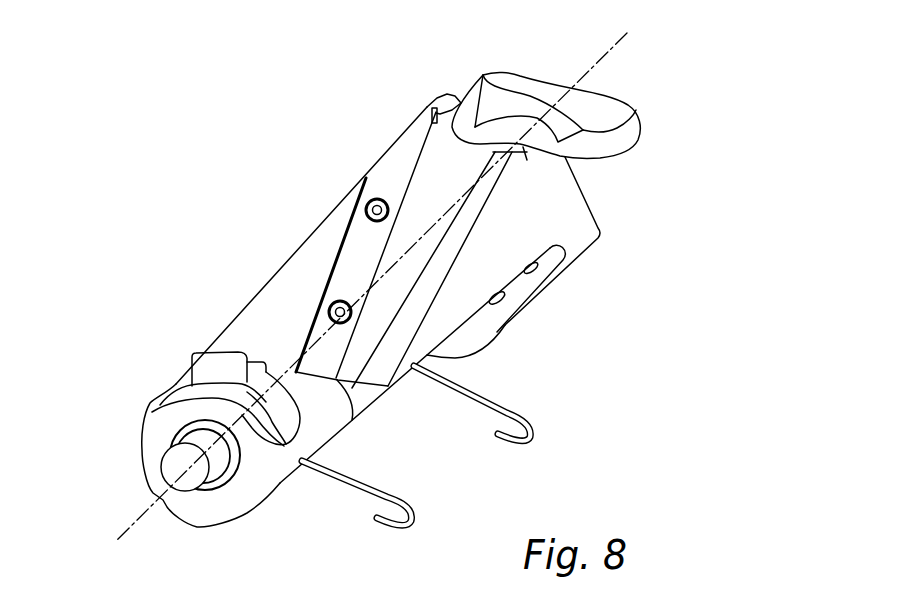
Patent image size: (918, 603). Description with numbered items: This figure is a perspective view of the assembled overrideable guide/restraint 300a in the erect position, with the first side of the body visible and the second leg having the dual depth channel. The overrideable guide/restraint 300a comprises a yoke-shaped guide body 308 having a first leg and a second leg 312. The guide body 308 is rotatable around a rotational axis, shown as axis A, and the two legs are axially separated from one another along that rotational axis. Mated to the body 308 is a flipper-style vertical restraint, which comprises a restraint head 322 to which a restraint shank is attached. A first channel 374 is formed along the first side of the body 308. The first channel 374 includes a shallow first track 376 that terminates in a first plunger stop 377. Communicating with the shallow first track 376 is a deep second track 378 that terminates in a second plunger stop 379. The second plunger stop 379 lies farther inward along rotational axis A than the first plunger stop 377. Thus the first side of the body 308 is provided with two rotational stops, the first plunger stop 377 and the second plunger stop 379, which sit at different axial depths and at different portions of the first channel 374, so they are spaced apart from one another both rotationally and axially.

The overrideable guide/restraint 300a is at (395, 279).
The guide body 308 is at (575, 190).
The second leg 312 is at (121, 440).
The restraint head 322 is at (614, 118).
The first channel 374 is at (176, 330).
The shallow first track 376 is at (275, 405).
The first plunger stop 377 is at (205, 406).
The deep second track 378 is at (193, 372).
The second plunger stop 379 is at (235, 365).